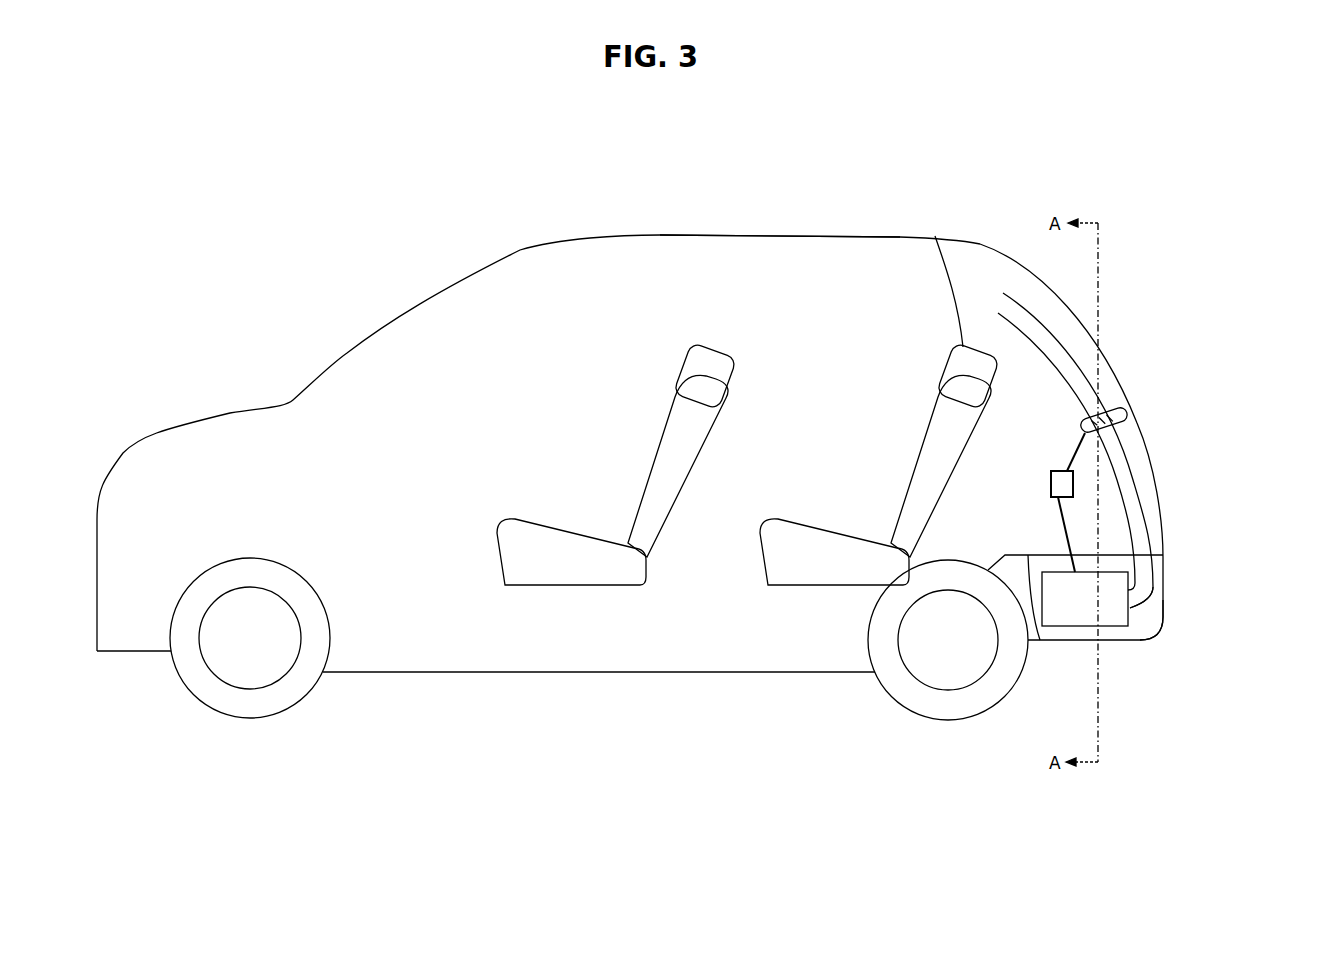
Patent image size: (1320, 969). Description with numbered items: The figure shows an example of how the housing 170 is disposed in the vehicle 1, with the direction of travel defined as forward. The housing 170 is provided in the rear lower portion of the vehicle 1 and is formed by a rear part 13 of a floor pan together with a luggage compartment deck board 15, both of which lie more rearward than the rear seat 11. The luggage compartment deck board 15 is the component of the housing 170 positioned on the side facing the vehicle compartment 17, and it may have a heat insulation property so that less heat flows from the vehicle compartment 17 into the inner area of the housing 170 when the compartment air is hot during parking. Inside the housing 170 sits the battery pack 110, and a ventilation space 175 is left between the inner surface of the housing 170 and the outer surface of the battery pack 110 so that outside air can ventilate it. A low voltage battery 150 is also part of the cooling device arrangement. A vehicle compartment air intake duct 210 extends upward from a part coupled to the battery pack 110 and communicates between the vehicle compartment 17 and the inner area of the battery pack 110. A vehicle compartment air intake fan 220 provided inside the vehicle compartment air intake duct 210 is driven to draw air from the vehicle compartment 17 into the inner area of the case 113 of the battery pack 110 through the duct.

The vehicle 1 is at (688, 215).
The rear seat 11 is at (935, 236).
The vehicle compartment 17 is at (797, 265).
The rear part of a floor pan 13 is at (1080, 642).
The luggage compartment deck board 15 is at (1038, 642).
The housing 170 is at (1092, 692).
The ventilation space 175 is at (1148, 642).
The battery pack 110 is at (1236, 591).
The case 113 is at (1140, 612).
The low voltage battery 150 is at (1073, 484).
The vehicle compartment air intake duct 210 is at (1133, 457).
The vehicle compartment air intake fan 220 is at (1128, 415).